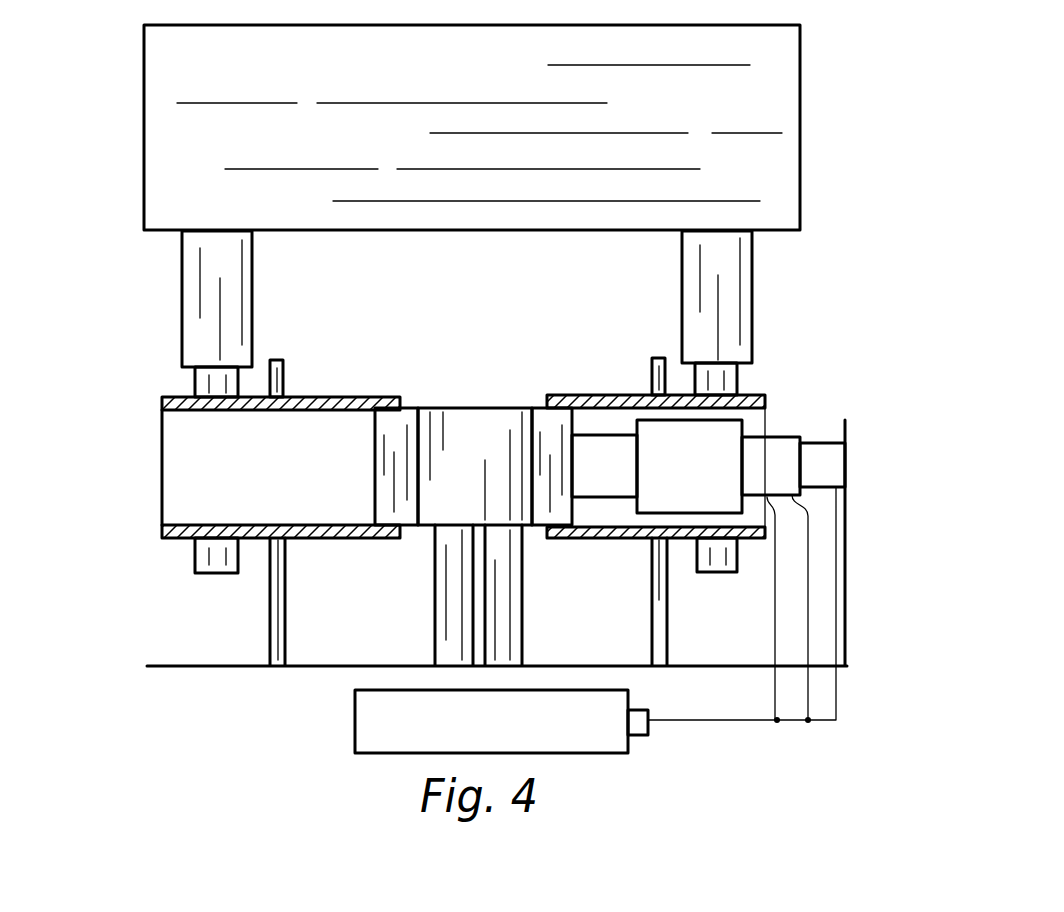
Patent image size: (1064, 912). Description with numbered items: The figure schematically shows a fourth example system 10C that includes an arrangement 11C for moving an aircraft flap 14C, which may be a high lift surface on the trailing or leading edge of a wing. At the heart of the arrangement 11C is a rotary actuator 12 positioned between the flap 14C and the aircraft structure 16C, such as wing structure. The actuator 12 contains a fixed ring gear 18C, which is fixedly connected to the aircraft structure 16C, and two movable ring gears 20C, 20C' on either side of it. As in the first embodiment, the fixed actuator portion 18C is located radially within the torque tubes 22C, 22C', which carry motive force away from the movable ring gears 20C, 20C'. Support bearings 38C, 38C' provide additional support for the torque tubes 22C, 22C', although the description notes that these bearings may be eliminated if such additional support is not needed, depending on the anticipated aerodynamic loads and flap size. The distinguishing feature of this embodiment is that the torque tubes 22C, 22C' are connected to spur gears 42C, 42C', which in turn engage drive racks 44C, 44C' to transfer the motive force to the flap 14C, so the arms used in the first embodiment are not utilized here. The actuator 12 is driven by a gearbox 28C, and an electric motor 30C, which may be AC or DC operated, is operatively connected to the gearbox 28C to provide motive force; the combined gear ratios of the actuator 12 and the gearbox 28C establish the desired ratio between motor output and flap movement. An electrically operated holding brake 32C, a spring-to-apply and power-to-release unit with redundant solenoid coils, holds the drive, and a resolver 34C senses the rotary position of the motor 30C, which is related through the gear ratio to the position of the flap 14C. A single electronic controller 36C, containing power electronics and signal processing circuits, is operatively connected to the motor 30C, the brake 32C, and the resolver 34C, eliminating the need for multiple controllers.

The system 10C is at (928, 298).
The arrangement 11C is at (840, 411).
The actuator 12 is at (330, 490).
The flap 14C is at (787, 103).
The aircraft structure 16C is at (205, 665).
The fixed ring gear 18C is at (467, 428).
The movable ring gear 20C is at (526, 440).
The movable ring gear 20C' is at (356, 466).
The torque tube 22C is at (656, 444).
The torque tube 22C' is at (281, 445).
The gearbox 28C is at (622, 479).
The electric motor 30C is at (705, 479).
The holding brake 32C is at (787, 479).
The resolver 34C is at (838, 479).
The electronic controller 36C is at (355, 718).
The support bearing 38C is at (631, 351).
The support bearing 38C' is at (311, 344).
The spur gear 42C is at (778, 371).
The spur gear 42C' is at (162, 375).
The drive rack 44C is at (759, 297).
The drive rack 44C' is at (169, 299).